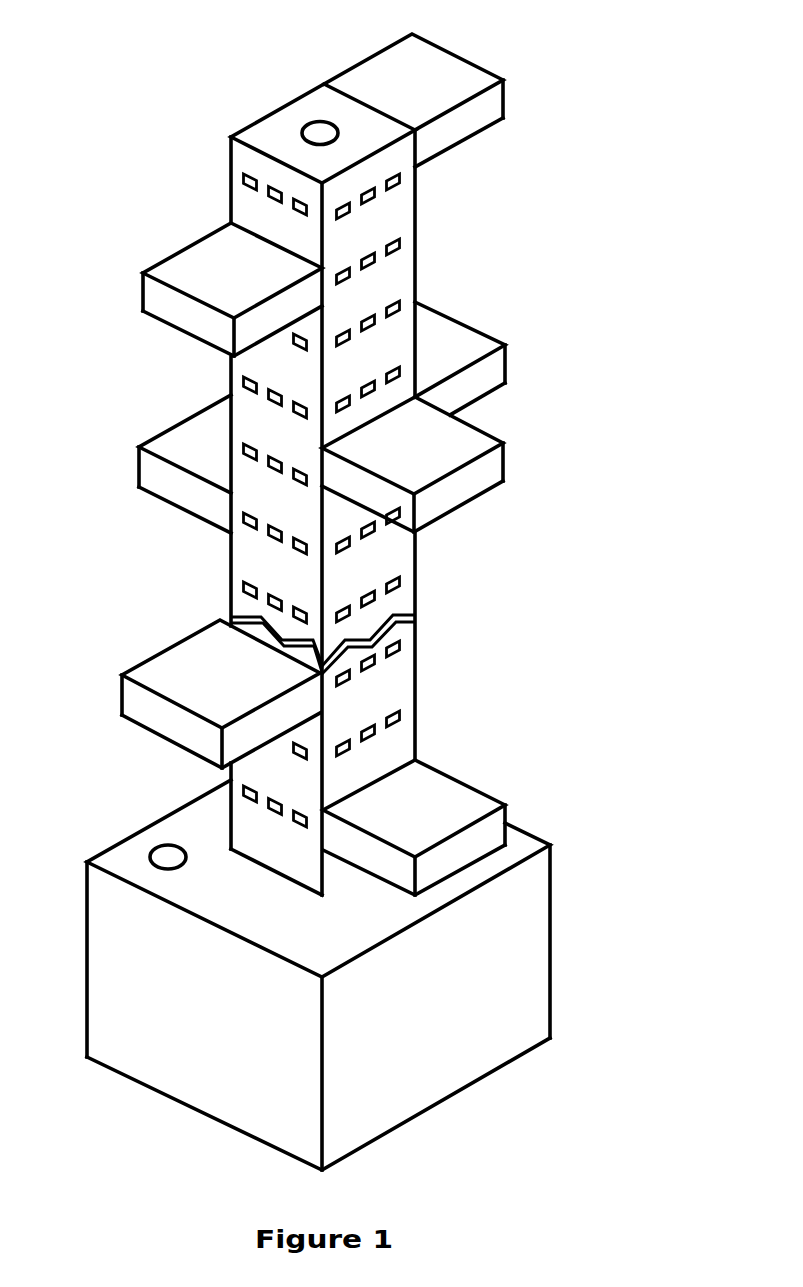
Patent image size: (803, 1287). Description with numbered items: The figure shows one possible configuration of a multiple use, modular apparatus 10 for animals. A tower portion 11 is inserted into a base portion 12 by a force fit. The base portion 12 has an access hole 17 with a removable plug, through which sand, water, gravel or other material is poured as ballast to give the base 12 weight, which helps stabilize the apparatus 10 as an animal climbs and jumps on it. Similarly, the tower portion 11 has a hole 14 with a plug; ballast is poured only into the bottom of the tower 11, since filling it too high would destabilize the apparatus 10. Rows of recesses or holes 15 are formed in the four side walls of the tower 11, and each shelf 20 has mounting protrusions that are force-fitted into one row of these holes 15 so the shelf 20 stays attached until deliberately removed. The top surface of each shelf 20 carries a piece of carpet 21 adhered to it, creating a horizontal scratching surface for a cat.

The multiple use modular apparatus 10 is at (180, 589).
The tower portion 11 is at (418, 242).
The base portion 12 is at (517, 952).
The hole 14 is at (310, 120).
The recesses or holes 15 is at (240, 374).
The access hole 17 is at (167, 840).
The shelf 20 is at (318, 457).
The piece of carpet 21 is at (438, 70).